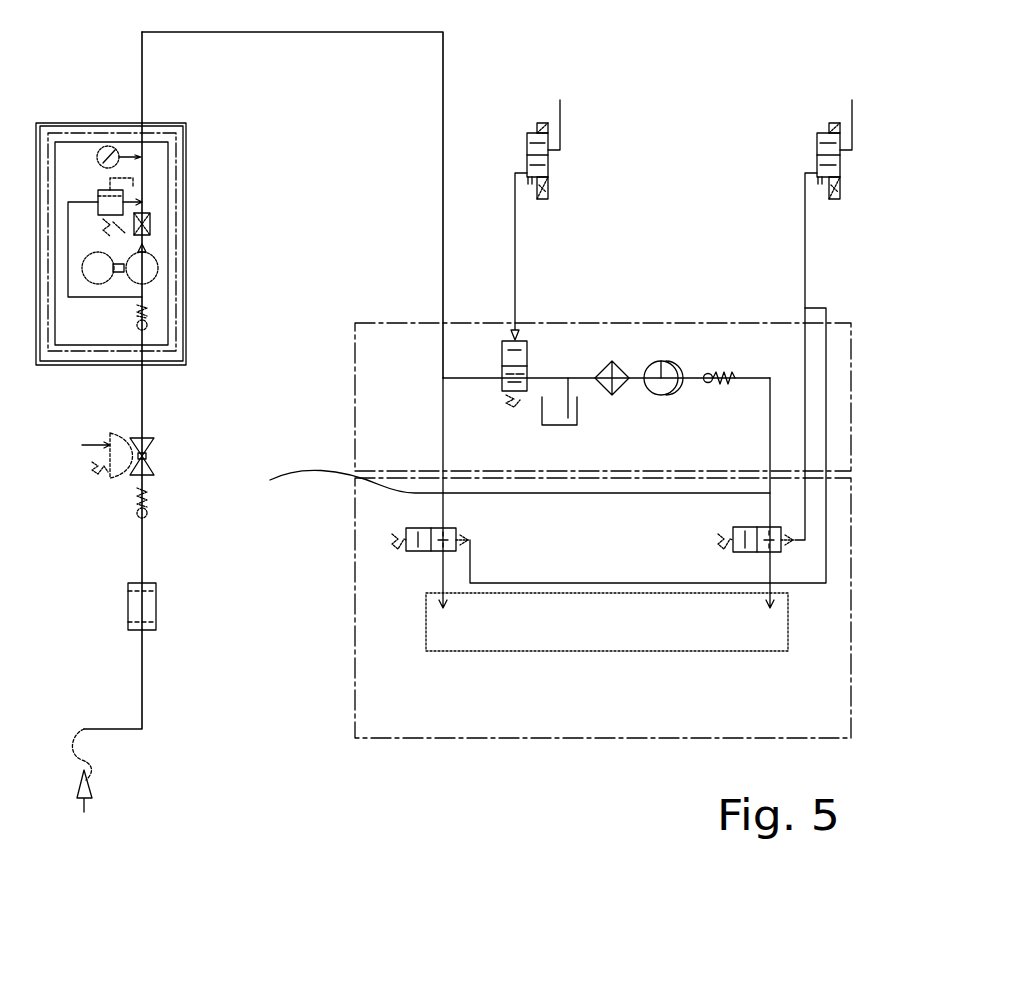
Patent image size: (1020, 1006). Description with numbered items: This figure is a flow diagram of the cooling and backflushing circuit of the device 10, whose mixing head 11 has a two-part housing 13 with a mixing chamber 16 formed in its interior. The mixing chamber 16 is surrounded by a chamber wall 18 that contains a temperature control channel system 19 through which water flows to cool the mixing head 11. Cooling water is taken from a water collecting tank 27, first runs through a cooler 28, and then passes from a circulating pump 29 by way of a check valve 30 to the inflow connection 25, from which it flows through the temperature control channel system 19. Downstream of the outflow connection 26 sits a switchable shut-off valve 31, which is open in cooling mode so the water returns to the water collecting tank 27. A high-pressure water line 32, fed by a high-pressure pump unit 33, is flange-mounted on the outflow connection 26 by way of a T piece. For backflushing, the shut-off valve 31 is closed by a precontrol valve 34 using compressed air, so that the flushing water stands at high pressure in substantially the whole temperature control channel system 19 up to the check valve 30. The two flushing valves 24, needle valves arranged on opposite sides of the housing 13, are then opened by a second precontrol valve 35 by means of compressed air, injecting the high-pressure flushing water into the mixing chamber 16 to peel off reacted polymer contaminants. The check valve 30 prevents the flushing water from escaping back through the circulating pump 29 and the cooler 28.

The device 10 is at (266, 764).
The mixing head 11 is at (603, 657).
The housing 13 is at (458, 738).
The mixing chamber 16 is at (613, 641).
The chamber wall 18 is at (672, 714).
The temperature control channel system 19 is at (607, 500).
The flushing valves 24 is at (733, 540).
The inflow connection 25 is at (770, 495).
The outflow connection 26 is at (499, 477).
The water collecting tank 27 is at (557, 410).
The cooler 28 is at (611, 362).
The circulating pump 29 is at (661, 365).
The check valve 30 is at (708, 372).
The shut-off valve 31 is at (500, 373).
The high-pressure water line 32 is at (443, 312).
The high-pressure pump unit 33 is at (156, 198).
The precontrol valve 34 is at (549, 152).
The second precontrol valve 35 is at (818, 140).